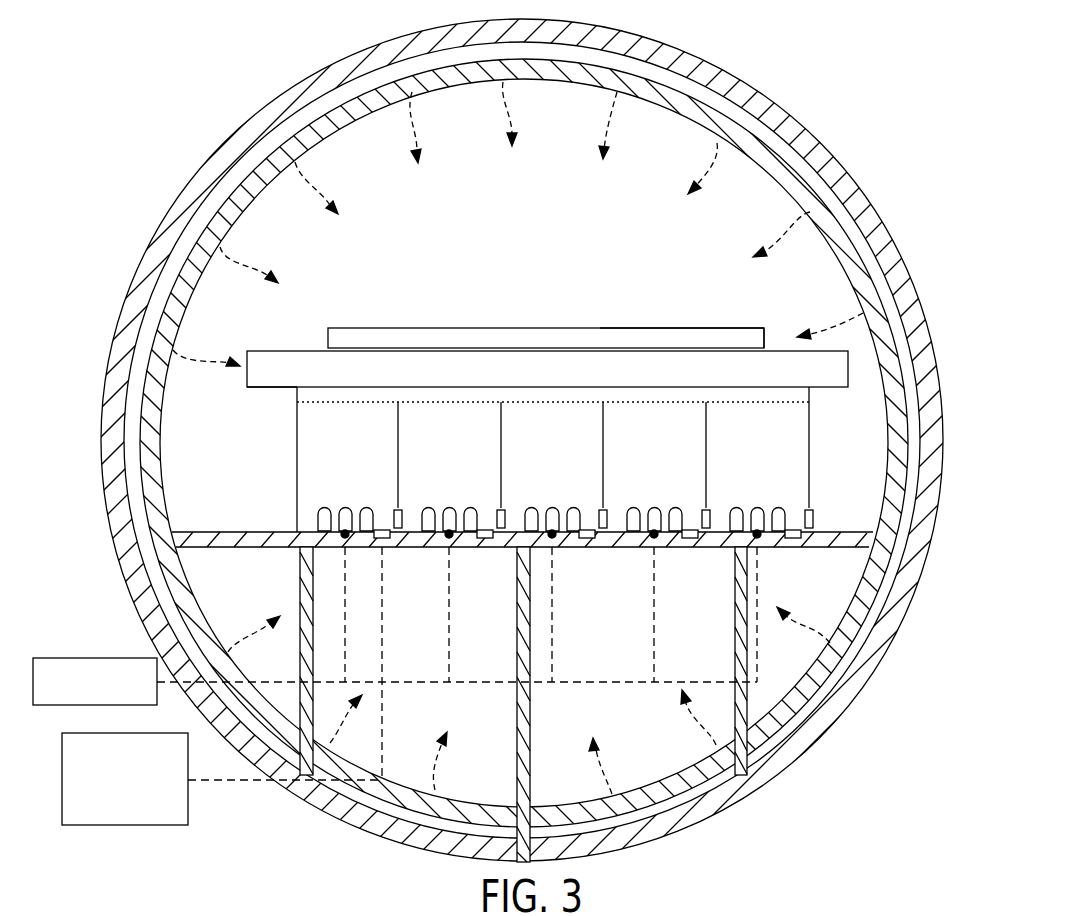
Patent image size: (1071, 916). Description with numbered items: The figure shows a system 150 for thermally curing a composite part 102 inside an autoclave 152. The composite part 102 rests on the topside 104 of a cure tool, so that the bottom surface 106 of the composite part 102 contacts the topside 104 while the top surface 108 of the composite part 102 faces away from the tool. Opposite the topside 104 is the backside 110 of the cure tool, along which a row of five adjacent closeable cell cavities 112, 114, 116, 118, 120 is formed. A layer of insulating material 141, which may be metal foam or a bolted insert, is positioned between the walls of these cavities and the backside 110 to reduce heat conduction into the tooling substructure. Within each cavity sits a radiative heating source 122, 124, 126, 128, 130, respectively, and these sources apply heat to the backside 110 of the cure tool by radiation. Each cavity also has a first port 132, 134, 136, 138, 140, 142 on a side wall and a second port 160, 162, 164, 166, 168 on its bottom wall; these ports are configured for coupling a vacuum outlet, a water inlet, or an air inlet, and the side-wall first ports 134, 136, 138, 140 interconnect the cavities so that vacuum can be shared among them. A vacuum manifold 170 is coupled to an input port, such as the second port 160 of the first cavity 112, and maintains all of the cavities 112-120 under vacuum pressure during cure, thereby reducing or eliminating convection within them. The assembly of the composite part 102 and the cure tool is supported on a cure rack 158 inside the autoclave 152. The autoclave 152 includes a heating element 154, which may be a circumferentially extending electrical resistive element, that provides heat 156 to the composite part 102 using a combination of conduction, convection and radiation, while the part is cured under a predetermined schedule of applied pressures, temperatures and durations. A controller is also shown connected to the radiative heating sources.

The composite part 102 is at (355, 327).
The topside of the cure tool 104 is at (265, 350).
The bottom surface of the composite part 106 is at (752, 342).
The top surface of the composite part 108 is at (709, 327).
The backside of the cure tool 110 is at (252, 388).
The closeable cell cavity 112 is at (330, 436).
The closeable cell cavity 114 is at (434, 436).
The closeable cell cavity 116 is at (537, 436).
The closeable cell cavity 118 is at (640, 436).
The closeable cell cavity 120 is at (743, 436).
The radiative heating source 122 is at (345, 507).
The radiative heating source 124 is at (449, 507).
The radiative heating source 126 is at (552, 507).
The radiative heating source 128 is at (654, 507).
The radiative heating source 130 is at (757, 507).
The first port 132 is at (95, 657).
The first port 134 is at (398, 530).
The first port 136 is at (501, 530).
The first port 138 is at (603, 530).
The first port 140 is at (706, 530).
The insulating material 141 is at (296, 392).
The first port 142 is at (812, 510).
The system 150 is at (535, 435).
The autoclave 152 is at (690, 63).
The heating element 154 is at (500, 817).
The heat 156 is at (515, 114).
The cure rack 158 is at (855, 526).
The second port 160 is at (378, 546).
The second port 162 is at (481, 546).
The second port 164 is at (583, 546).
The second port 166 is at (686, 546).
The second port 168 is at (789, 546).
The vacuum manifold 170 is at (118, 826).